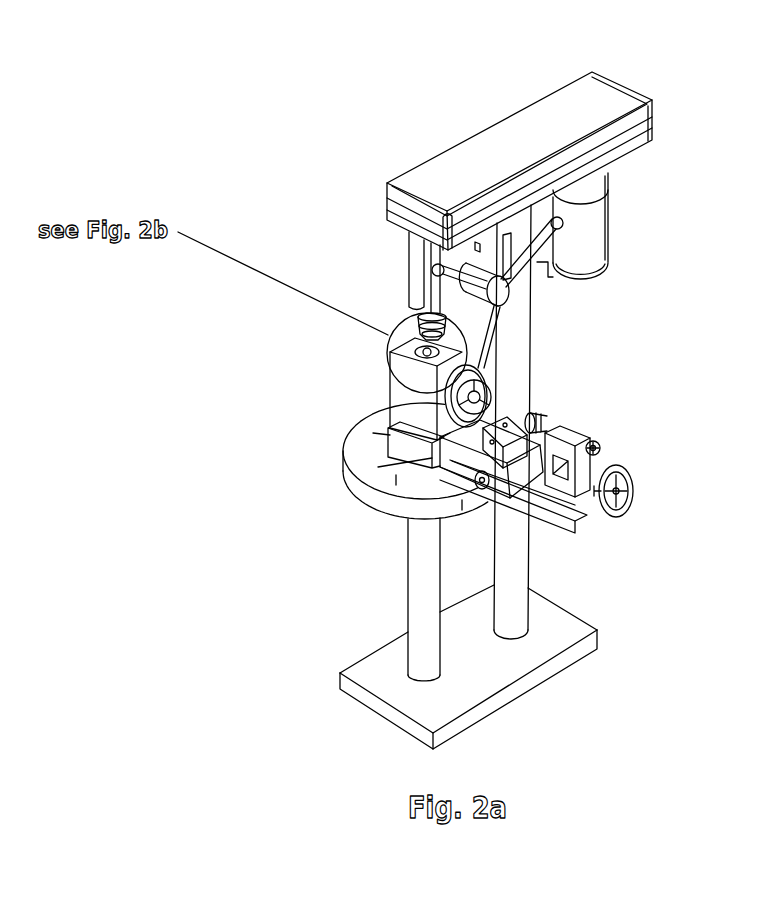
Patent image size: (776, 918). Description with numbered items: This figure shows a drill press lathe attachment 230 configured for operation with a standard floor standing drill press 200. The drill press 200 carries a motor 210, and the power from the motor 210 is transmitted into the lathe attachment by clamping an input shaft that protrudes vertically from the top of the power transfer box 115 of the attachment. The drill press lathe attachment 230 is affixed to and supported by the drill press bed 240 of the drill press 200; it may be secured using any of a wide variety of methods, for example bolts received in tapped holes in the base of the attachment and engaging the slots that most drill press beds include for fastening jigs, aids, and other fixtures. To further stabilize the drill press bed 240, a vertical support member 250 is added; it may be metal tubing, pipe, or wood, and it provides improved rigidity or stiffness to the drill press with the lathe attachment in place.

The drill press 200 is at (497, 122).
The motor 210 is at (615, 228).
The drill press lathe attachment 230 is at (575, 423).
The power transfer box 115 is at (345, 435).
The drill press bed 240 is at (387, 513).
The vertical support member 250 is at (405, 588).